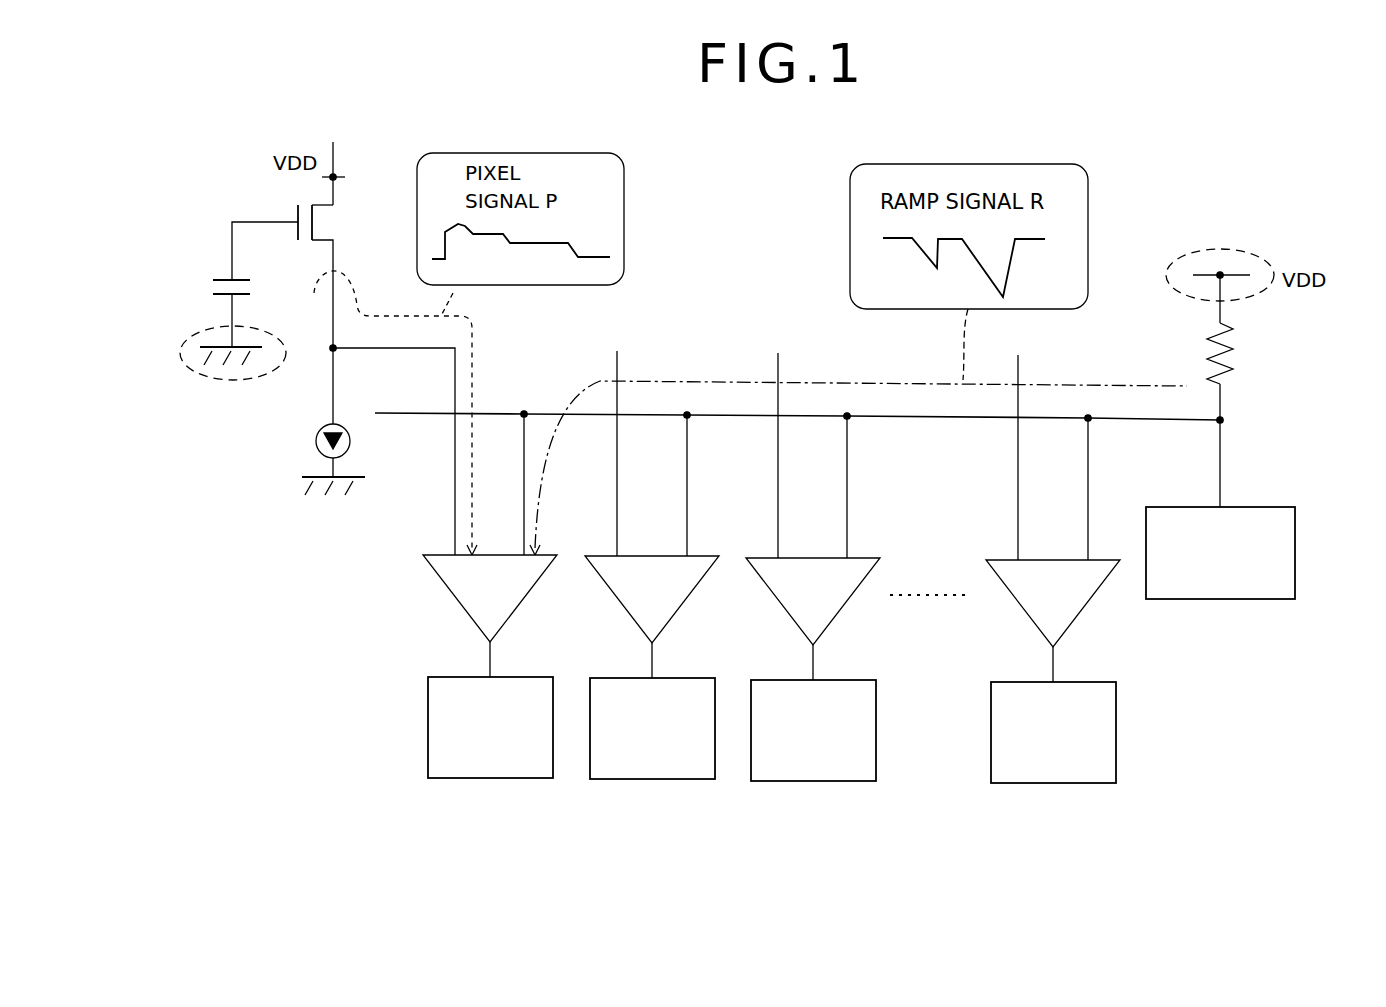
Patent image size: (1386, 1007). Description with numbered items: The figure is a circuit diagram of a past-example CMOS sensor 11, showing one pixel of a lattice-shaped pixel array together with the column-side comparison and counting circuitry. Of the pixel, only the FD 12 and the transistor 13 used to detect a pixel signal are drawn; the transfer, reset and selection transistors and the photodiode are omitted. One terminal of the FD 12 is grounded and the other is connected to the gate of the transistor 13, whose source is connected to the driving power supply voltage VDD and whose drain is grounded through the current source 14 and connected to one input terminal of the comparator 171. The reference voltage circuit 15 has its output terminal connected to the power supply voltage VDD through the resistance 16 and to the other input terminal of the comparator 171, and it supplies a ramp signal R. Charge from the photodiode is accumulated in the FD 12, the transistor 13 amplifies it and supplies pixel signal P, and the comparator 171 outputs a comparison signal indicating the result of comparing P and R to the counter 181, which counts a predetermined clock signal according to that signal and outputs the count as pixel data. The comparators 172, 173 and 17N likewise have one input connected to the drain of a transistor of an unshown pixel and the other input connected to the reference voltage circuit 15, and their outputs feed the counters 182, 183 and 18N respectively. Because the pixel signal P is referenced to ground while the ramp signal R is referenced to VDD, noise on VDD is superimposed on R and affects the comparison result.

The CMOS sensor 11 is at (300, 657).
The FD (Floating Diffusion) 12 is at (229, 278).
The transistor 13 is at (298, 210).
The current source 14 is at (316, 441).
The reference voltage circuit 15 is at (1220, 600).
The resistance 16 is at (1235, 345).
The comparator 171 is at (462, 606).
The comparator 172 is at (623, 607).
The comparator 173 is at (784, 609).
The comparator 17N is at (1024, 611).
The counter 181 is at (490, 780).
The counter 182 is at (652, 781).
The counter 183 is at (813, 783).
The counter 18N is at (1053, 785).